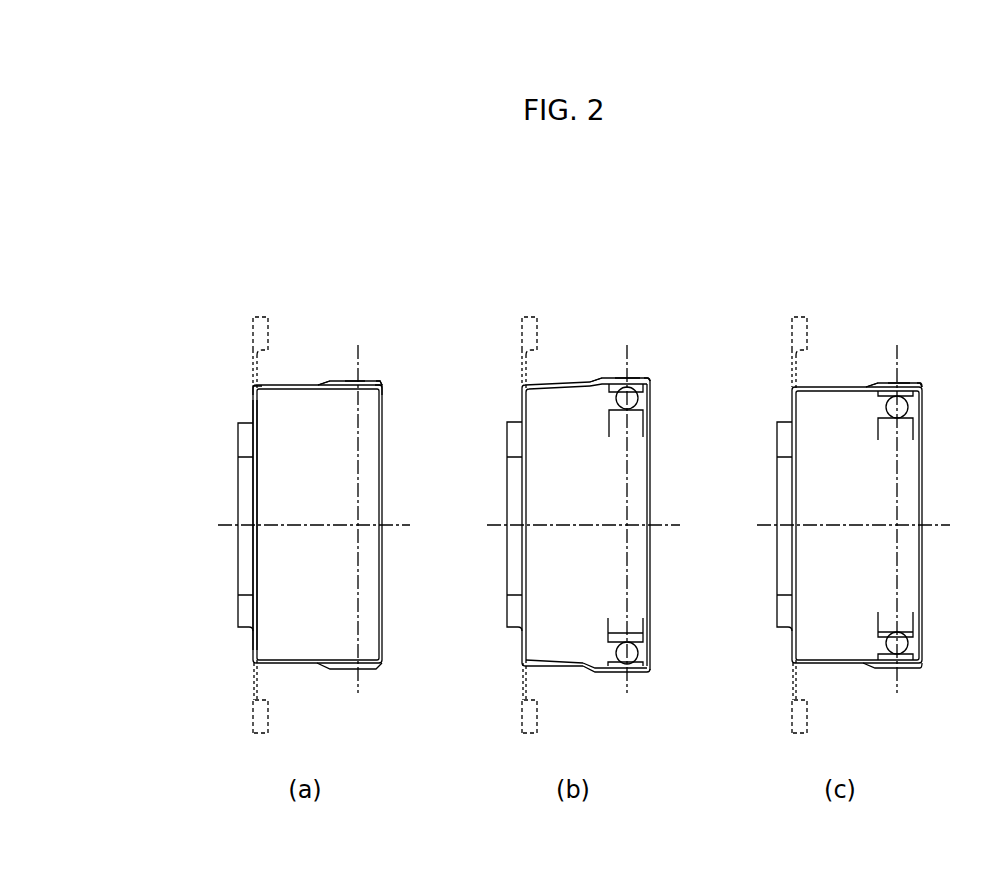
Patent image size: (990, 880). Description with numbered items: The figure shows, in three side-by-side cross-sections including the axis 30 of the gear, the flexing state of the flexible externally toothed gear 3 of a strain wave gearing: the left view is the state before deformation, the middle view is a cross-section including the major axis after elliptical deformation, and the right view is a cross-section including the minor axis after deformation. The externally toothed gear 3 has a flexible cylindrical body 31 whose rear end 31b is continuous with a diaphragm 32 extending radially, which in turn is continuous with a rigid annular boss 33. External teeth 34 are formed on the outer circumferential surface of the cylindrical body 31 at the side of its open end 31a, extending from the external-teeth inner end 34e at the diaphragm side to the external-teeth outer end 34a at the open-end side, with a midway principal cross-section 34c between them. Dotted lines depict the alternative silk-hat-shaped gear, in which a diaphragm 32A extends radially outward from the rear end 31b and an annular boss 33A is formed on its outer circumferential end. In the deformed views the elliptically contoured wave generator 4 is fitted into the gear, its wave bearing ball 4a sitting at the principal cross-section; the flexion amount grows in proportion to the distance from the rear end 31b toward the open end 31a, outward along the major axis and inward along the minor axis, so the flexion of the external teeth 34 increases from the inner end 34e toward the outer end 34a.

The externally toothed gear 3 is at (543, 467).
The central axis 30 is at (360, 465).
The cylindrical body 31 is at (287, 390).
The open end 31a is at (383, 383).
The rear end 31b is at (252, 387).
The diaphragm 32 is at (253, 408).
The diaphragm 32A is at (247, 370).
The annular boss 33 is at (245, 440).
The annular boss 33A is at (248, 337).
The external teeth 34 is at (363, 378).
The external-teeth outer end 34a is at (378, 380).
The center portion of bearing holding portion 34c is at (352, 381).
The external-teeth inner end 34e is at (322, 382).
The wave generator 4 is at (784, 525).
The ball 4a is at (637, 398).